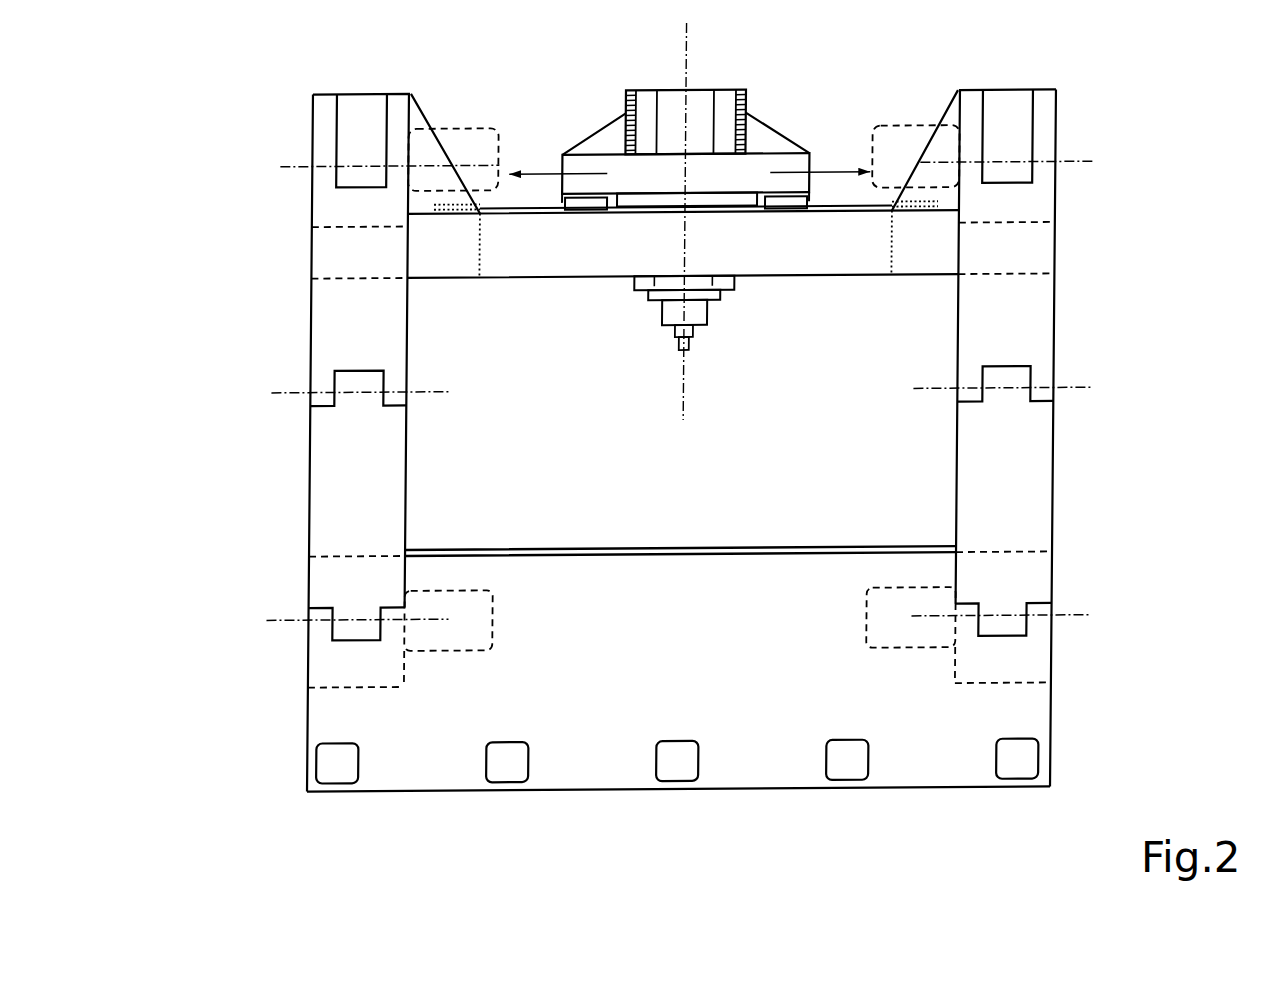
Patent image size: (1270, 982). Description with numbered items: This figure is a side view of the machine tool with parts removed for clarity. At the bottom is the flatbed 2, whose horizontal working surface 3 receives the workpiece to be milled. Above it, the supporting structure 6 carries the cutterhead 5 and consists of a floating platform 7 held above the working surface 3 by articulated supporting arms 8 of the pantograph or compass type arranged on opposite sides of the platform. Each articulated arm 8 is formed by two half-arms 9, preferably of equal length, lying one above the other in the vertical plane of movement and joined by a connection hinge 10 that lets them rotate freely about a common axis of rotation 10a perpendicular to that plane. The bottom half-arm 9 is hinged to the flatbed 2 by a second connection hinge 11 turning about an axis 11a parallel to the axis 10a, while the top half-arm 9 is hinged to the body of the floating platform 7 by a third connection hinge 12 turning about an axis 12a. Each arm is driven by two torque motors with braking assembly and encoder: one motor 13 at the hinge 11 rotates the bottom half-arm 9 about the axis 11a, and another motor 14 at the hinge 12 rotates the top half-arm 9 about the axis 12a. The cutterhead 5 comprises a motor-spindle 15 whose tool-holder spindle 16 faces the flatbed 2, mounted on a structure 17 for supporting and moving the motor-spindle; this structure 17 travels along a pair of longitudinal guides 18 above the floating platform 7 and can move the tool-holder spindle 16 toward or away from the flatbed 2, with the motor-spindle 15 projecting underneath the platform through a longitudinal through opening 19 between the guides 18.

The bottom flatbed 2 is at (643, 583).
The horizontal working surface 3 is at (746, 543).
The cutterhead 5 is at (757, 98).
The supporting structure 6 is at (1194, 106).
The floating platform 7 is at (520, 278).
The articulated supporting arm 8 is at (212, 363).
The half-arm 9 is at (322, 325).
The connection hinge 10 is at (368, 402).
The axis of rotation 10a is at (290, 394).
The second connection hinge 11 is at (331, 641).
The axis of rotation 11a is at (290, 614).
The third connection hinge 12 is at (352, 122).
The axis of rotation 12a is at (278, 164).
The electric motor 13 is at (430, 652).
The electric motor 14 is at (453, 125).
The motor-spindle 15 is at (675, 105).
The tool-holder spindle 16 is at (667, 310).
The structure for supporting and moving the motor-spindle 17 is at (588, 158).
The longitudinal guides 18 is at (530, 207).
The longitudinal through opening 19 is at (884, 243).